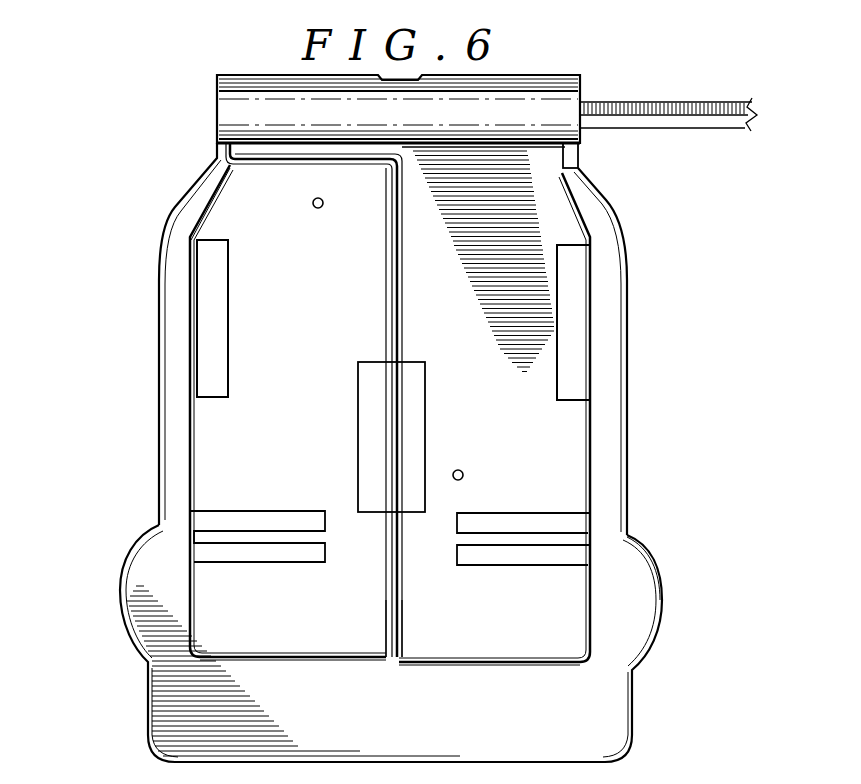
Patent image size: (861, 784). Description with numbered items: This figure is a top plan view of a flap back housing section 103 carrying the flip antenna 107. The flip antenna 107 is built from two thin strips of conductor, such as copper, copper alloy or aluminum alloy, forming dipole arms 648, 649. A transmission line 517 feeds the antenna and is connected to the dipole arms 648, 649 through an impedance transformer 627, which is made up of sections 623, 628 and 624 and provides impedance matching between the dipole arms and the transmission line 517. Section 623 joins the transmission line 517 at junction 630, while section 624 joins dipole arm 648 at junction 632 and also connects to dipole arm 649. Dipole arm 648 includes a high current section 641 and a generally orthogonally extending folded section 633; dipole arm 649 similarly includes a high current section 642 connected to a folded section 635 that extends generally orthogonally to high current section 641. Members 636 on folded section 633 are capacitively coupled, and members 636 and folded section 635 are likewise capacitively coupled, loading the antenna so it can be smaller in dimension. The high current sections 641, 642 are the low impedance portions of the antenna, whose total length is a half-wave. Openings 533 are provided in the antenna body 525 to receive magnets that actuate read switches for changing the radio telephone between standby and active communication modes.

The housing 103 is at (139, 737).
The flip antenna 107 is at (530, 692).
The transmission line 517 is at (667, 101).
The antenna body 525 is at (562, 199).
The openings 533 is at (212, 272).
The section of impedance transformer 623 is at (403, 298).
The section of impedance transformer 624 is at (396, 641).
The impedance transformer 627 is at (340, 294).
The section of impedance transformer 628 is at (420, 378).
The junction 630 is at (388, 171).
The junction 632 is at (425, 658).
The folded section 633 is at (590, 613).
The folded section 635 is at (193, 590).
The members 636 is at (323, 552).
The high current section 641 is at (448, 660).
The high current section 642 is at (238, 656).
The dipole arm 648 is at (586, 664).
The dipole arm 649 is at (274, 671).